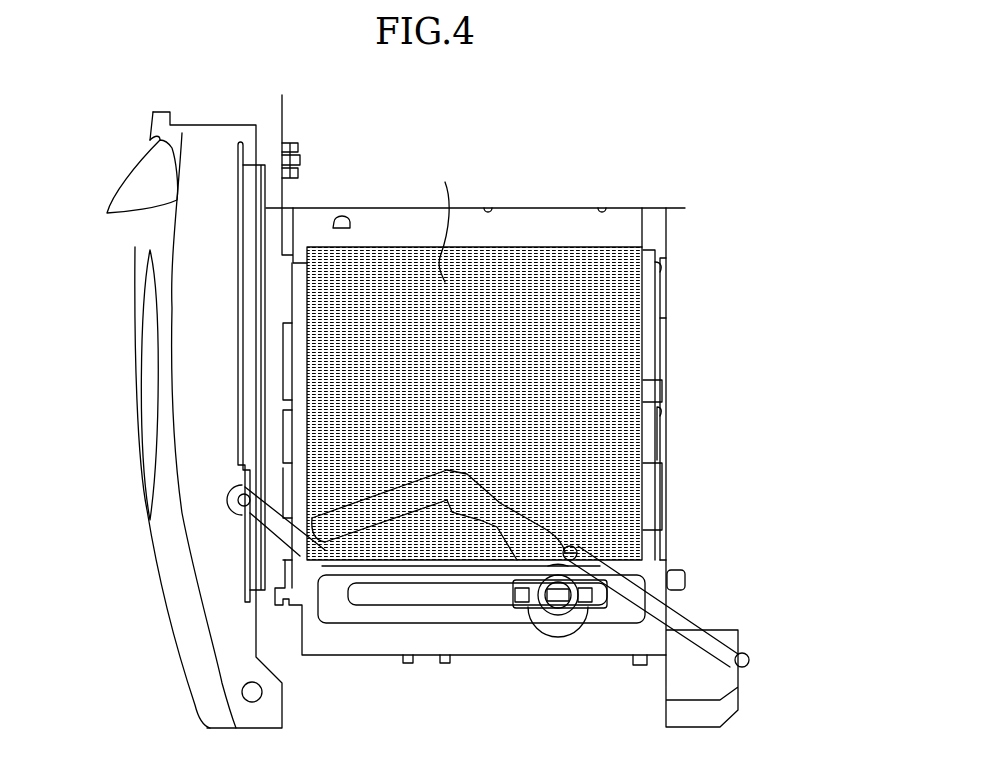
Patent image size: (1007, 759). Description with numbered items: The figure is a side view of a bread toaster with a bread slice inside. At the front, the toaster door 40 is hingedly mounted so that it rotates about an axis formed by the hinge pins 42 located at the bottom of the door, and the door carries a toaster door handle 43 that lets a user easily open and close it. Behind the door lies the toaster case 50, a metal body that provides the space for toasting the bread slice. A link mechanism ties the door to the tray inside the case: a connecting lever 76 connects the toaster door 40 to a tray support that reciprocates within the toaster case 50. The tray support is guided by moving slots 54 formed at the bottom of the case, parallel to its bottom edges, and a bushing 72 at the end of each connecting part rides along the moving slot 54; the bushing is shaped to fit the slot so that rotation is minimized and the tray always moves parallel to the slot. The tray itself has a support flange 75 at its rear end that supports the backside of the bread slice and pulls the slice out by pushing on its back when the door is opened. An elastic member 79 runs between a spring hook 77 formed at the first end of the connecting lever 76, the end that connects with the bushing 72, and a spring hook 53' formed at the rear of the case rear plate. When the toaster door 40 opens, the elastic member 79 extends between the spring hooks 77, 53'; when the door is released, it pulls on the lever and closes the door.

The toaster door 40 is at (168, 395).
The hinge pins 42 is at (253, 693).
The toaster door handle 43 is at (140, 192).
The toaster case 50 is at (527, 227).
The spring hook 53' is at (797, 670).
The moving slots 54 is at (410, 593).
The bushing 72 is at (588, 565).
The support flange 75 is at (660, 432).
The connecting lever 76 is at (400, 493).
The spring hook 77 is at (575, 550).
The elastic member 79 is at (683, 620).